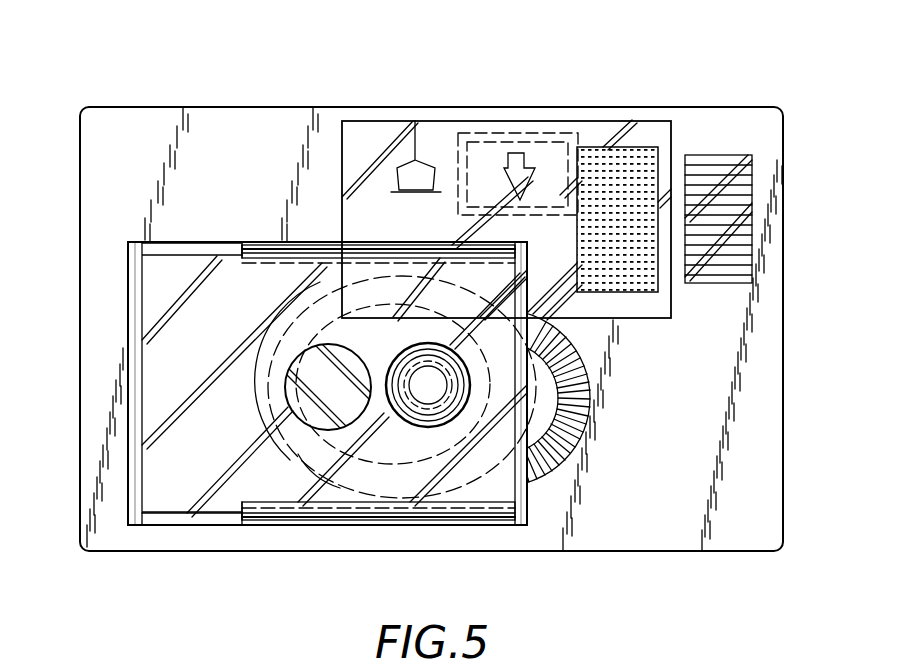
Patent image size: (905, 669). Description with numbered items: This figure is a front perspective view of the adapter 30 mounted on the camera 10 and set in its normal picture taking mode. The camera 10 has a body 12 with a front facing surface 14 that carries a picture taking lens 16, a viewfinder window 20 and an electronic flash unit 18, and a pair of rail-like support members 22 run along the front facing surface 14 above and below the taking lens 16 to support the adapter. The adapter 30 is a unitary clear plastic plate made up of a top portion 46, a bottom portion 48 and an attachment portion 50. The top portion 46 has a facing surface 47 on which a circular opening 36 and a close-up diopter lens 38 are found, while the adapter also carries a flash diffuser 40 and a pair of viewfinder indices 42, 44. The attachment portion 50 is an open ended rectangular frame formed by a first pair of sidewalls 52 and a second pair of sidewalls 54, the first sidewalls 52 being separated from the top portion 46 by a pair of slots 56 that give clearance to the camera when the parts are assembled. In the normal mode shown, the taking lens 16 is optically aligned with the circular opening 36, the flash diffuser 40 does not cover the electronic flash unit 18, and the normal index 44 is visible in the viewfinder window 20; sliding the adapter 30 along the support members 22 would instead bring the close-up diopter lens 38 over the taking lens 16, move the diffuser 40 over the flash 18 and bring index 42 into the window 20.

The camera 10 is at (128, 86).
The body 12 is at (294, 105).
The front facing surface 14 is at (752, 447).
The picture taking lens 16 is at (428, 370).
The electronic flash unit 18 is at (706, 155).
The viewfinder window 20 is at (538, 162).
The rail-like support members 22 is at (400, 245).
The adapter 30 is at (112, 228).
The circular opening 36 is at (428, 400).
The close-up diopter lens 38 is at (288, 430).
The flash diffuser 40 is at (628, 146).
The close-up viewfinder index 42 is at (415, 120).
The normal viewfinder index 44 is at (515, 150).
The top portion 46 is at (165, 485).
The facing surface 47 is at (155, 463).
The bottom portion 48 is at (338, 169).
The attachment portion 50 is at (124, 265).
The first pair of sidewalls 52 is at (219, 243).
The second pair of sidewalls 54 is at (128, 313).
The slots 56 is at (232, 255).